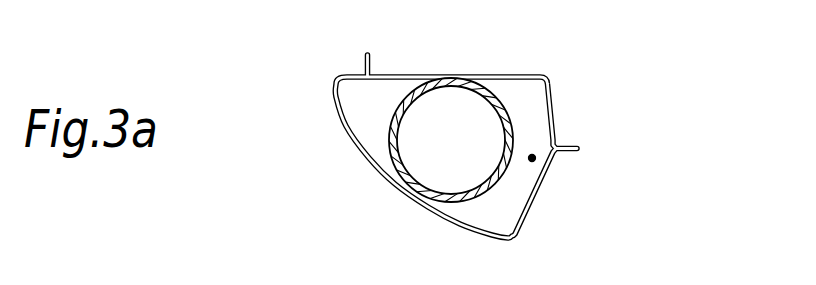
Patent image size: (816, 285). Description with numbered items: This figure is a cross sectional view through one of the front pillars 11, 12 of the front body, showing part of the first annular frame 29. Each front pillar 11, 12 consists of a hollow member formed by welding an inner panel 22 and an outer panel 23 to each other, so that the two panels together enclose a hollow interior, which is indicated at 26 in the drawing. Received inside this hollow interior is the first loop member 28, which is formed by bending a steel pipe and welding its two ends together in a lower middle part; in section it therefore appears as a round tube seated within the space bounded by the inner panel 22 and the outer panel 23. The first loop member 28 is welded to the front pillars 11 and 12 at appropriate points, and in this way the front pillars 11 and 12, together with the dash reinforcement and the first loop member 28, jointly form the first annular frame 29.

The front pillar 11 is at (415, 151).
The front pillar 12 is at (376, 178).
The inner panel 22 is at (543, 76).
The outer panel 23 is at (527, 222).
The interior space 26 is at (532, 158).
The first loop member 28 is at (422, 80).
The first annular frame 29 is at (673, 116).